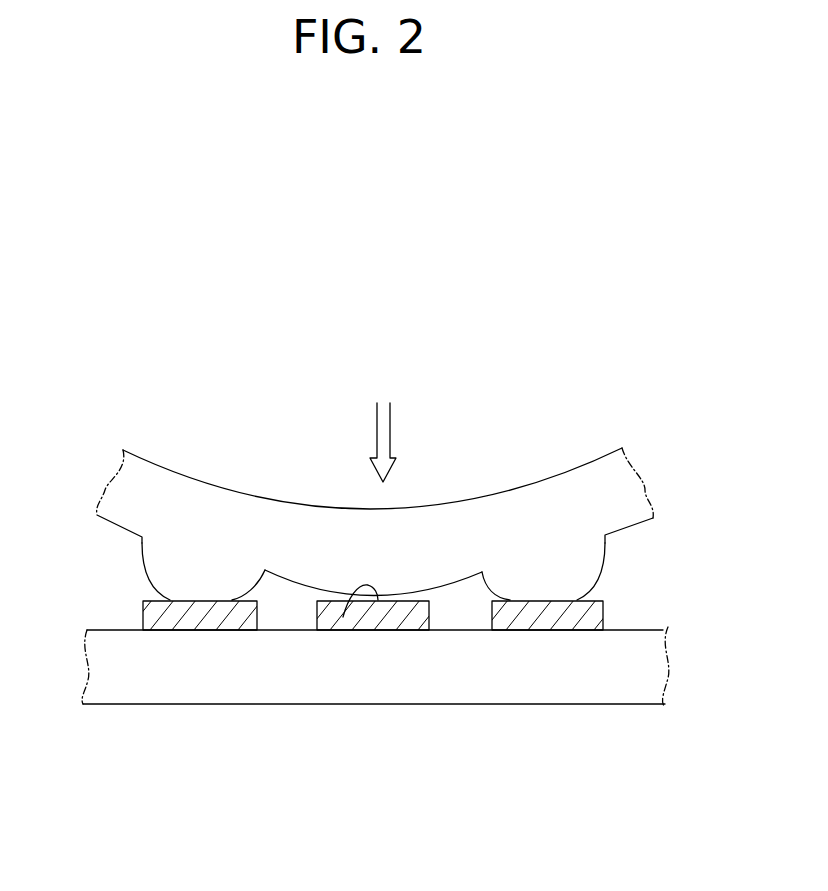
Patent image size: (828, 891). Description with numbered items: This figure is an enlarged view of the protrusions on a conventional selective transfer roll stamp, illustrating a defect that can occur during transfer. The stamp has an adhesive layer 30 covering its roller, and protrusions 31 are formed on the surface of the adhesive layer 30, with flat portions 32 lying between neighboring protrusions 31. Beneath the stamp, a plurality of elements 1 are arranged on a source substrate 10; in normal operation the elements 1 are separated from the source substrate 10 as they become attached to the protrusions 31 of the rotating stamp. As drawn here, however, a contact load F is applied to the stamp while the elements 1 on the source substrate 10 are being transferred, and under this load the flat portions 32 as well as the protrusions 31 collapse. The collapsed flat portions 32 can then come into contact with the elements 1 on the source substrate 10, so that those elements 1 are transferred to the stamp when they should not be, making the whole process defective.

The elements 1 is at (400, 617).
The source substrate 10 is at (664, 628).
The adhesive layer 30 is at (587, 490).
The protrusions 31 is at (177, 560).
The flat portions 32 is at (343, 617).
The contact load F is at (390, 430).